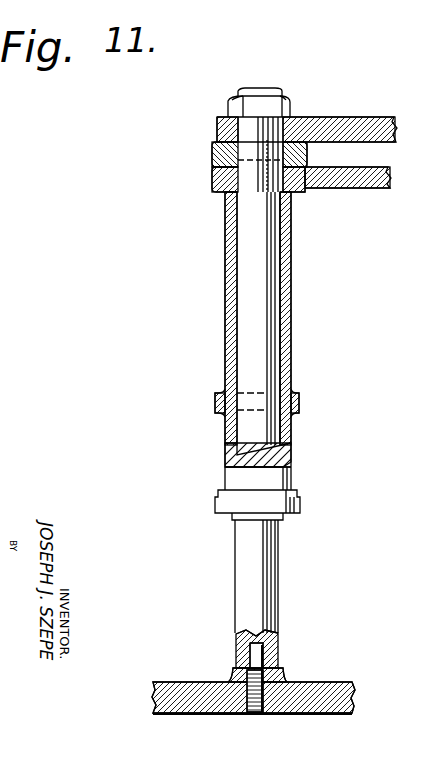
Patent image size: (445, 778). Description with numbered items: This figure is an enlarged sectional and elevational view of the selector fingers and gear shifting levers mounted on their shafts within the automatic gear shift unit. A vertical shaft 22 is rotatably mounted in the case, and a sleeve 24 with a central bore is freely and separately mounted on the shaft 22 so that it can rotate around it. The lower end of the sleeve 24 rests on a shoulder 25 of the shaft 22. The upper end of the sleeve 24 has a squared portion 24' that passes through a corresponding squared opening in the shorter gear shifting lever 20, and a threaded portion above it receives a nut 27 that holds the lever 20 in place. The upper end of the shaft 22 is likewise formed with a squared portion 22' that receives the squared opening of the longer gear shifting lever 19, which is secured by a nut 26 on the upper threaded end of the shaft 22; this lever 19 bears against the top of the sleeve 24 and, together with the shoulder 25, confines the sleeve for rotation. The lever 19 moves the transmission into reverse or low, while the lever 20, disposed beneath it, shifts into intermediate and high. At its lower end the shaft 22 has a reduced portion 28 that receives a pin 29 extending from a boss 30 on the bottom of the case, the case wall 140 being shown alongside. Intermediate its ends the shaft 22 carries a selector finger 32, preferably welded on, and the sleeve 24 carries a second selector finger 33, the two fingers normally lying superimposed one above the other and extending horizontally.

The gear shifting lever 19 is at (372, 120).
The gear shifting lever 20 is at (390, 178).
The shaft 22 is at (301, 281).
The squared portion 22' is at (215, 129).
The sleeve 24 is at (285, 341).
The squared portion 24' is at (237, 198).
The shoulder 25 is at (288, 448).
The nut 26 is at (290, 106).
The nut 27 is at (308, 152).
The reduced portion 28 is at (278, 594).
The pin 29 is at (233, 677).
The boss 30 is at (280, 680).
The selector finger 32 is at (292, 506).
The selector finger 33 is at (302, 404).
The wall 140 is at (347, 698).